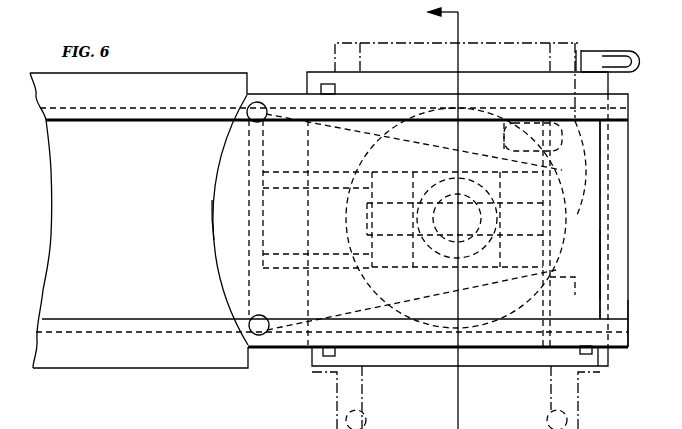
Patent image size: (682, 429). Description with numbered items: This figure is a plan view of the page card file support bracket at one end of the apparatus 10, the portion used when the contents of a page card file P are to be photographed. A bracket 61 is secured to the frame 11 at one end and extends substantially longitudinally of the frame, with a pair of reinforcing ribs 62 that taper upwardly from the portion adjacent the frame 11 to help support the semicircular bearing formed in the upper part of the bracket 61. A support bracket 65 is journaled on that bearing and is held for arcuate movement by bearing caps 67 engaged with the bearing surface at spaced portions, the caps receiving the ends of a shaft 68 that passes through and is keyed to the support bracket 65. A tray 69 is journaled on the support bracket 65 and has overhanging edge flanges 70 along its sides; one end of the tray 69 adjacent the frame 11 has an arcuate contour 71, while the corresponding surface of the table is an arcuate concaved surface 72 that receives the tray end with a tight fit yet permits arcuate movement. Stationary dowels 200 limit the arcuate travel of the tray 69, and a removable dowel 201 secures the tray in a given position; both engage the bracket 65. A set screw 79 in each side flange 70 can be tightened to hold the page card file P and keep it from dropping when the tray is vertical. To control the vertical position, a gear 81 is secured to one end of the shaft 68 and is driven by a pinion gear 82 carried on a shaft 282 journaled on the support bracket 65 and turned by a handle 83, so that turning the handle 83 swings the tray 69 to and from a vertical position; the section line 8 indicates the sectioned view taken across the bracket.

The section line 8 is at (432, 218).
The assembly 10 is at (221, 73).
The frame 11 is at (61, 370).
The bracket 61 is at (421, 144).
The reinforcing ribs 62 is at (468, 270).
The support bracket 65 is at (598, 360).
The bearing caps 67 is at (402, 173).
The shaft 68 is at (575, 211).
The tray 69 is at (626, 340).
The overhanging edge flanges 70 is at (597, 128).
The arcuate contour 71 is at (214, 214).
The arcuate concaved surface 72 is at (217, 243).
The set screw 79 is at (263, 103).
The gear 81 is at (577, 284).
The pinion gear 82 is at (560, 118).
The handle 83 is at (625, 60).
The stationary dowels 200 is at (326, 84).
The removable dowel 201 is at (322, 352).
The shaft 282 is at (512, 117).
The page card file P is at (600, 271).